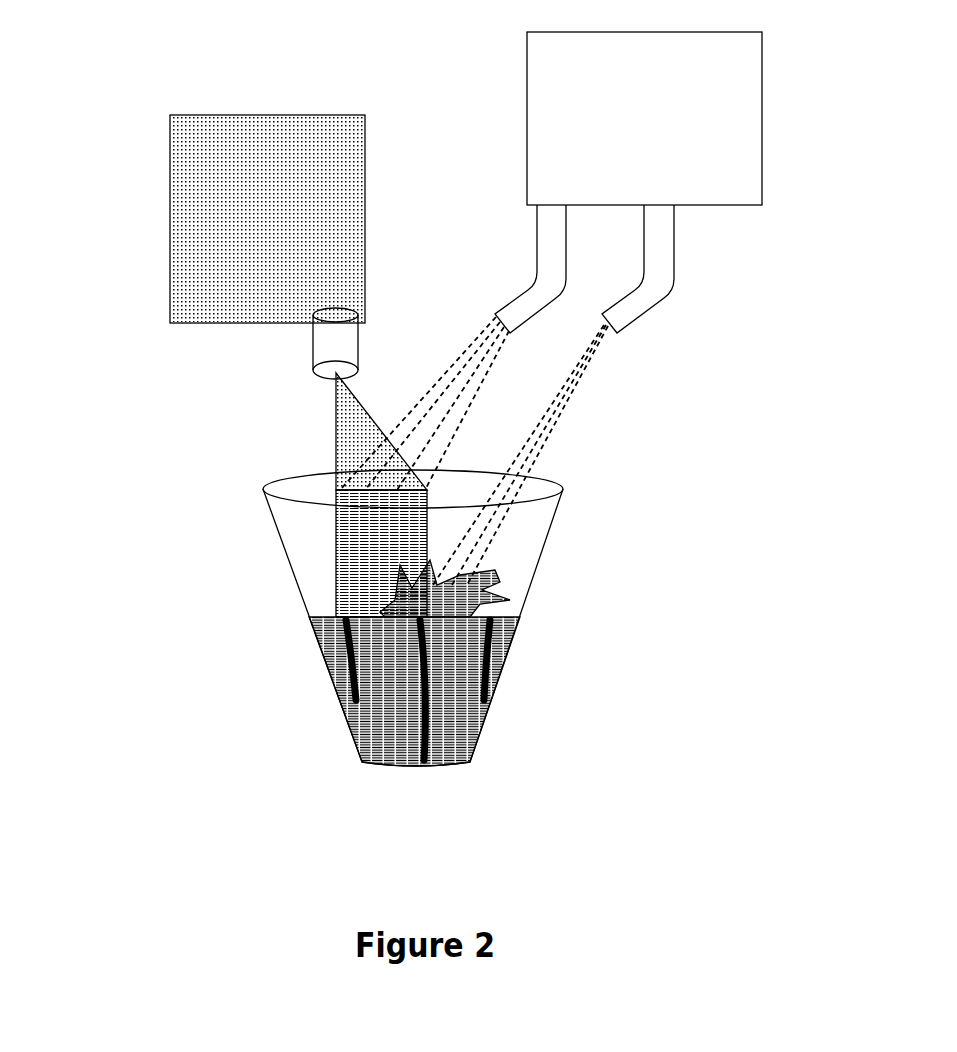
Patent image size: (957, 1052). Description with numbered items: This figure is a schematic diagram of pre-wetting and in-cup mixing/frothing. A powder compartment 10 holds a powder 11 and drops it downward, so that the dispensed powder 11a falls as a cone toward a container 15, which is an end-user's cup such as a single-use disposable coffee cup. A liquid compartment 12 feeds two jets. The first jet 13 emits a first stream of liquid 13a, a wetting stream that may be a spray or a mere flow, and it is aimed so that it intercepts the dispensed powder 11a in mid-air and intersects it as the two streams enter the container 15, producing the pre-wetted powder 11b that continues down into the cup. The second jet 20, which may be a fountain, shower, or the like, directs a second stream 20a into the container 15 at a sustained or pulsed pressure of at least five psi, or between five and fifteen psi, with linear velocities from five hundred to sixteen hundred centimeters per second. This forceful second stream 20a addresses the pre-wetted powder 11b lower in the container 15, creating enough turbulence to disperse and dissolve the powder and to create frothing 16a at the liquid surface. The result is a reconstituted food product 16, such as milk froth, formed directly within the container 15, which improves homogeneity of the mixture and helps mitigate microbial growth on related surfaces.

The powder compartment 10 is at (175, 283).
The powder 11 is at (208, 165).
The dispensed powder 11a is at (335, 442).
The pre-wetted powder 11b is at (343, 572).
The radiation source unit 12 is at (527, 70).
The jet 13 is at (537, 243).
The first stream of liquid 13a is at (460, 365).
The container 15 is at (550, 528).
The reconstituted food product 16 is at (500, 678).
The frothing 16a is at (468, 585).
The jet 20 is at (675, 267).
The second stream 20a is at (557, 417).